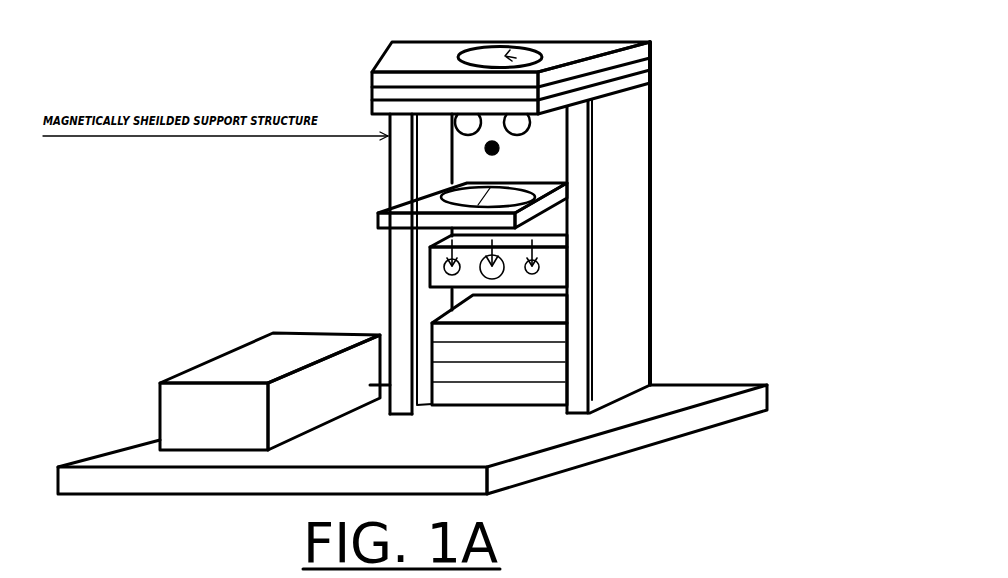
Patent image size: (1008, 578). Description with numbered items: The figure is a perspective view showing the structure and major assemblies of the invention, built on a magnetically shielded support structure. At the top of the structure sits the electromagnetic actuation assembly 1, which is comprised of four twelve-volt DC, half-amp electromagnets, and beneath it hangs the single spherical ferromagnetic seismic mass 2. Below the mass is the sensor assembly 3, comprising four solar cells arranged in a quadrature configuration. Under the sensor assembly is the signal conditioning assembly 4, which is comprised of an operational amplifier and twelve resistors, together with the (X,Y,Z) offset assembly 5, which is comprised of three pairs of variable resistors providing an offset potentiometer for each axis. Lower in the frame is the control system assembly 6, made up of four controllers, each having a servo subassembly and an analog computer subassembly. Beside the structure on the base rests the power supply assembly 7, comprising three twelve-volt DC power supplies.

The electromagnetic actuation assembly 1 is at (616, 71).
The ferromagnetic seismic mass 2 is at (860, 149).
The sensor assembly 3 is at (390, 205).
The signal conditioning assembly 4 is at (432, 265).
The (X,Y,Z) offset assembly 5 is at (860, 240).
The control system assembly 6 is at (860, 309).
The power supply assembly 7 is at (222, 355).